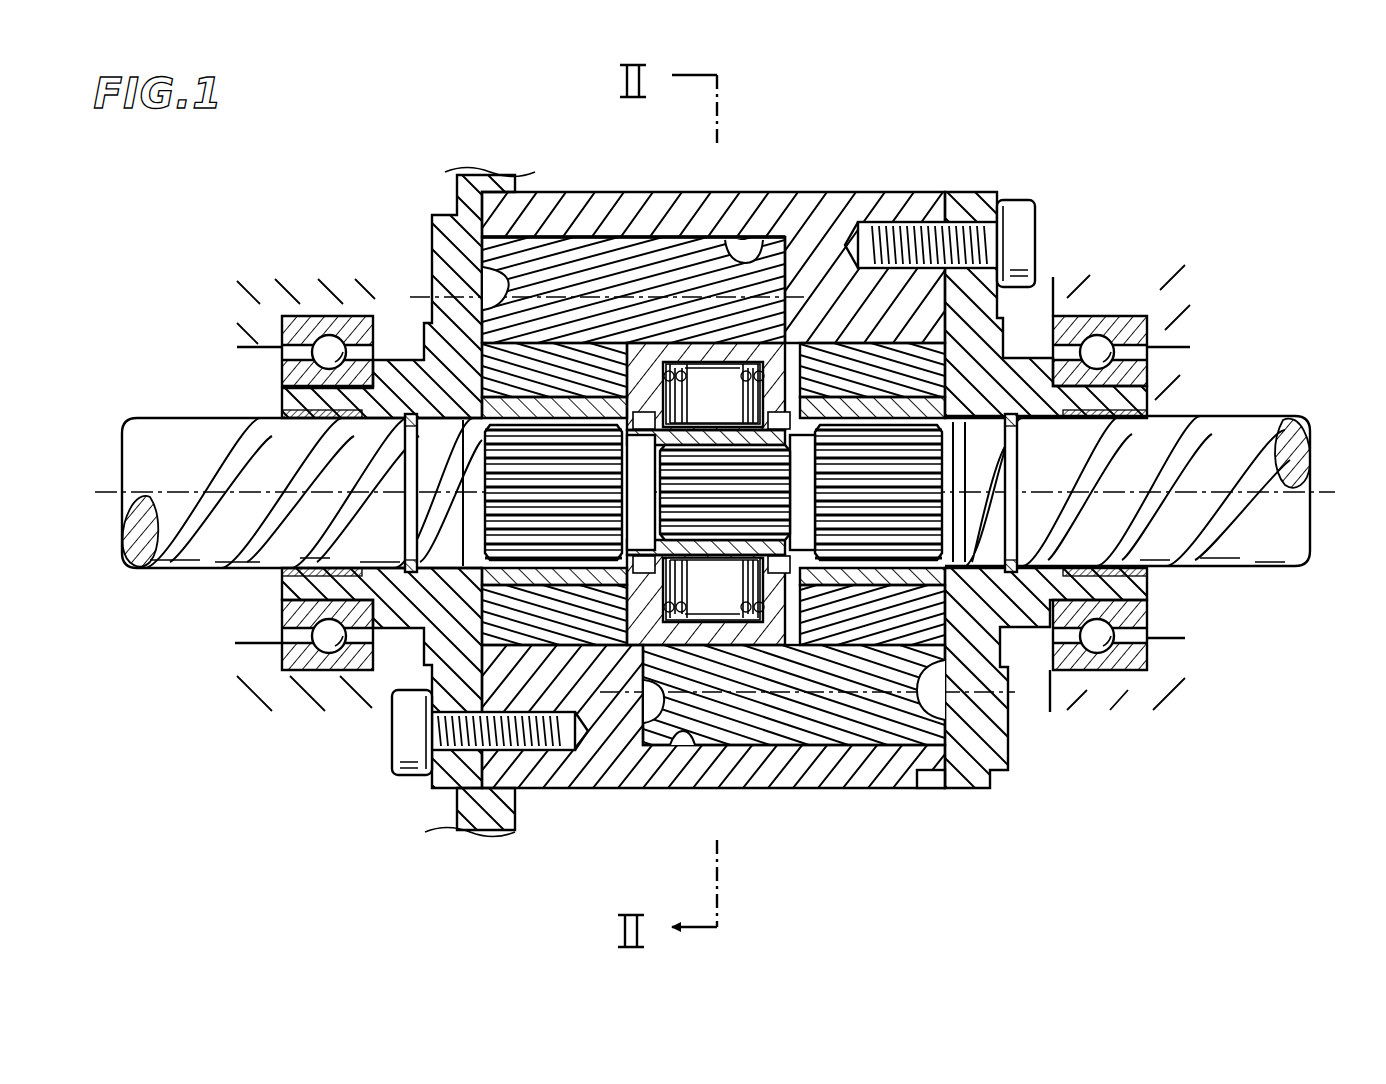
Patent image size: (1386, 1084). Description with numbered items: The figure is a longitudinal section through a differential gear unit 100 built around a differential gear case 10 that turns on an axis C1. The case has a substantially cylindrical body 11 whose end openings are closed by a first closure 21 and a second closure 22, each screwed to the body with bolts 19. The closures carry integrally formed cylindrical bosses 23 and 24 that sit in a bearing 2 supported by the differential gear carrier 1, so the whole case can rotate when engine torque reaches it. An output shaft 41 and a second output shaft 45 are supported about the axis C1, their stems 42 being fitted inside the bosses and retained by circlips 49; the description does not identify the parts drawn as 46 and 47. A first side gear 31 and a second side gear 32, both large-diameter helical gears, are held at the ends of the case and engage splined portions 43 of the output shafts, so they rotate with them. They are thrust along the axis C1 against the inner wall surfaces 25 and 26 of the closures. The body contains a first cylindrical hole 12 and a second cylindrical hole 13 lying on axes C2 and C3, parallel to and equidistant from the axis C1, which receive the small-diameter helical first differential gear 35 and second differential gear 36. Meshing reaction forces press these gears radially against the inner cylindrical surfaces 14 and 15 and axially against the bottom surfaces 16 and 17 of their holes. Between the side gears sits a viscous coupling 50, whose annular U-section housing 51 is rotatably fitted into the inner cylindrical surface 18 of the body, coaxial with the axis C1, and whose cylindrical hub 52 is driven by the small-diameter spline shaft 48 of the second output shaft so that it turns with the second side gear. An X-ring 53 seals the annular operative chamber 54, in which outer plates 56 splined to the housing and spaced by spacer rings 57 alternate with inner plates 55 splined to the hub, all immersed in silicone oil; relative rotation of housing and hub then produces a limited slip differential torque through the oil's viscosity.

The differential gear unit 100 is at (1263, 224).
The differential gear carrier 1 is at (313, 297).
The bearing 2 is at (283, 332).
The differential gear case 10 is at (1003, 186).
The cylindrical body 11 is at (895, 200).
The first cylindrical hole 12 is at (845, 118).
The second cylindrical hole 13 is at (612, 795).
The inner cylindrical surface 14 is at (768, 245).
The inner cylindrical surface 15 is at (668, 742).
The bottom surface 16 is at (782, 332).
The bottom surface 17 is at (630, 727).
The inner cylindrical surface 18 is at (855, 316).
The bolt 19 is at (1013, 233).
The first closure 21 is at (1007, 308).
The second closure 22 is at (452, 234).
The boss 23 is at (1120, 398).
The boss 24 is at (283, 405).
The inner wall surface 25 is at (990, 757).
The inner wall surface 26 is at (470, 272).
The first side gear 31 is at (541, 398).
The second side gear 32 is at (802, 587).
The first differential gear 35 is at (548, 303).
The second differential gear 36 is at (940, 668).
The output shaft 41 is at (213, 577).
The stem 42 is at (226, 510).
The splined portion 43 is at (538, 510).
The second output shaft 45 is at (1218, 578).
The right output shaft 46 is at (1178, 510).
The right side gear 47 is at (858, 510).
The small-diameter spline shaft 48 is at (706, 510).
The circlip 49 is at (403, 428).
The viscous coupling 50 is at (702, 338).
The annular housing 51 is at (643, 357).
The cylindrical hub 52 is at (672, 430).
The X-ring 53 is at (782, 655).
The operative chamber 54 is at (691, 413).
The inner plate 55 is at (685, 640).
The outer plate 56 is at (724, 635).
The spacer ring 57 is at (762, 640).
The axis C1 is at (1331, 490).
The axis C2 is at (423, 295).
The axis C3 is at (1000, 693).